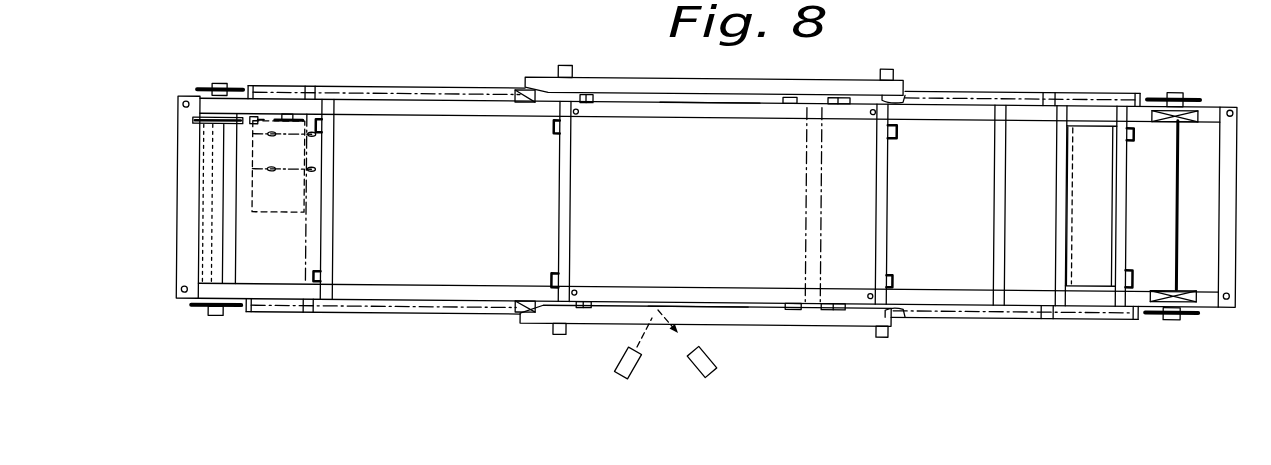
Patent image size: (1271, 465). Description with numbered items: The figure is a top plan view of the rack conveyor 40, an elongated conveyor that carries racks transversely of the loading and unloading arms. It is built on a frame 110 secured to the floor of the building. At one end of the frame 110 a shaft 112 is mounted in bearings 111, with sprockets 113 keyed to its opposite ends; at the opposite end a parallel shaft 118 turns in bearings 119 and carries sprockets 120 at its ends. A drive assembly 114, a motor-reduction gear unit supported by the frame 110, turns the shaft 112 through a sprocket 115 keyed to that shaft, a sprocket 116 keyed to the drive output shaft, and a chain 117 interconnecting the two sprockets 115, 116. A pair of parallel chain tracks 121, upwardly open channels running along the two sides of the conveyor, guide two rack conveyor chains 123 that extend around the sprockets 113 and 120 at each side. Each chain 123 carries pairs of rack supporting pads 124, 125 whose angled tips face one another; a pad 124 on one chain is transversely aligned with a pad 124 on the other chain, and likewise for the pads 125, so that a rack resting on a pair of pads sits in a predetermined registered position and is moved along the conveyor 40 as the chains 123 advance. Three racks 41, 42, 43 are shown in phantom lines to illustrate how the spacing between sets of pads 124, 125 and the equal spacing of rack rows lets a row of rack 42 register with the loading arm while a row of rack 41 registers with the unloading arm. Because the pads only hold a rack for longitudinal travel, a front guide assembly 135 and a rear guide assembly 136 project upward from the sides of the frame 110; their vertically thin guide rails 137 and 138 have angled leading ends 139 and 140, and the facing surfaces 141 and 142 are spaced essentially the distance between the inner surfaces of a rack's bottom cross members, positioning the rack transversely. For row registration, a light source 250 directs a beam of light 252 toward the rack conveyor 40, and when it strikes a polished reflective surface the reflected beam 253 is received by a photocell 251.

The rack conveyor 40 is at (976, 83).
The rack 41 is at (1071, 204).
The rack 42 is at (808, 210).
The rack 43 is at (303, 232).
The frame 110 is at (948, 322).
The bearings 111 is at (204, 291).
The shaft 112 is at (218, 157).
The sprockets 113 is at (238, 87).
The drive assembly 114 is at (314, 156).
The sprocket 115 is at (195, 128).
The sprocket 116 is at (304, 119).
The chain 117 is at (252, 123).
The shaft 118 is at (1178, 193).
The bearings 119 is at (1193, 298).
The sprockets 120 is at (1157, 316).
The chain tracks 121 is at (1020, 94).
The rack conveyor chains 123 is at (1162, 61).
The rack supporting pad 124 is at (316, 90).
The rack supporting pad 125 is at (522, 101).
The front guide assembly 135 is at (781, 329).
The rear guide assembly 136 is at (648, 78).
The guide rail 137 is at (833, 324).
The guide rail 138 is at (760, 80).
The angled leading end 139 is at (902, 317).
The angled leading end 140 is at (900, 99).
The facing surface 141 is at (700, 302).
The facing surface 142 is at (710, 101).
The light source 250 is at (619, 369).
The photocell 251 is at (716, 368).
The beam of light 252 is at (644, 329).
The reflected beam 253 is at (687, 340).